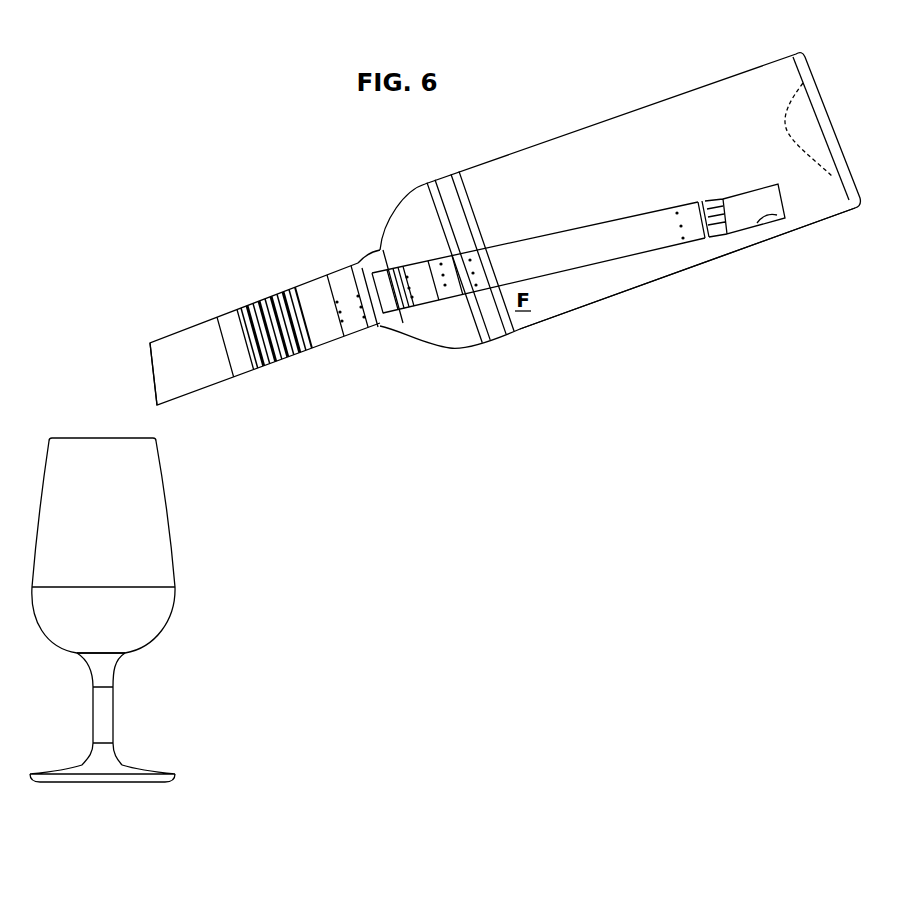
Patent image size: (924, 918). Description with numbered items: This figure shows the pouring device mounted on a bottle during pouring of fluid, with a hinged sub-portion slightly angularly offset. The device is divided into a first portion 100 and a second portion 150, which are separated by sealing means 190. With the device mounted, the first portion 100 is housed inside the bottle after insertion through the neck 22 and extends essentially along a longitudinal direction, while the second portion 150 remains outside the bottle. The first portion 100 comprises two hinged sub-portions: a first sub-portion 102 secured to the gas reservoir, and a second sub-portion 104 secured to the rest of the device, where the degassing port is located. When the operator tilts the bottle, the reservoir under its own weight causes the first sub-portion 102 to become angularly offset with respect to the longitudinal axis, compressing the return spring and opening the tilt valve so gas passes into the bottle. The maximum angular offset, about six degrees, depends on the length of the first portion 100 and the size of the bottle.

The first portion 100 is at (609, 224).
The neck 22 is at (467, 319).
The second portion 150 is at (250, 394).
The sealing means 190 is at (297, 377).
The second sub-portion 104 is at (398, 342).
The first sub-portion 102 is at (800, 246).